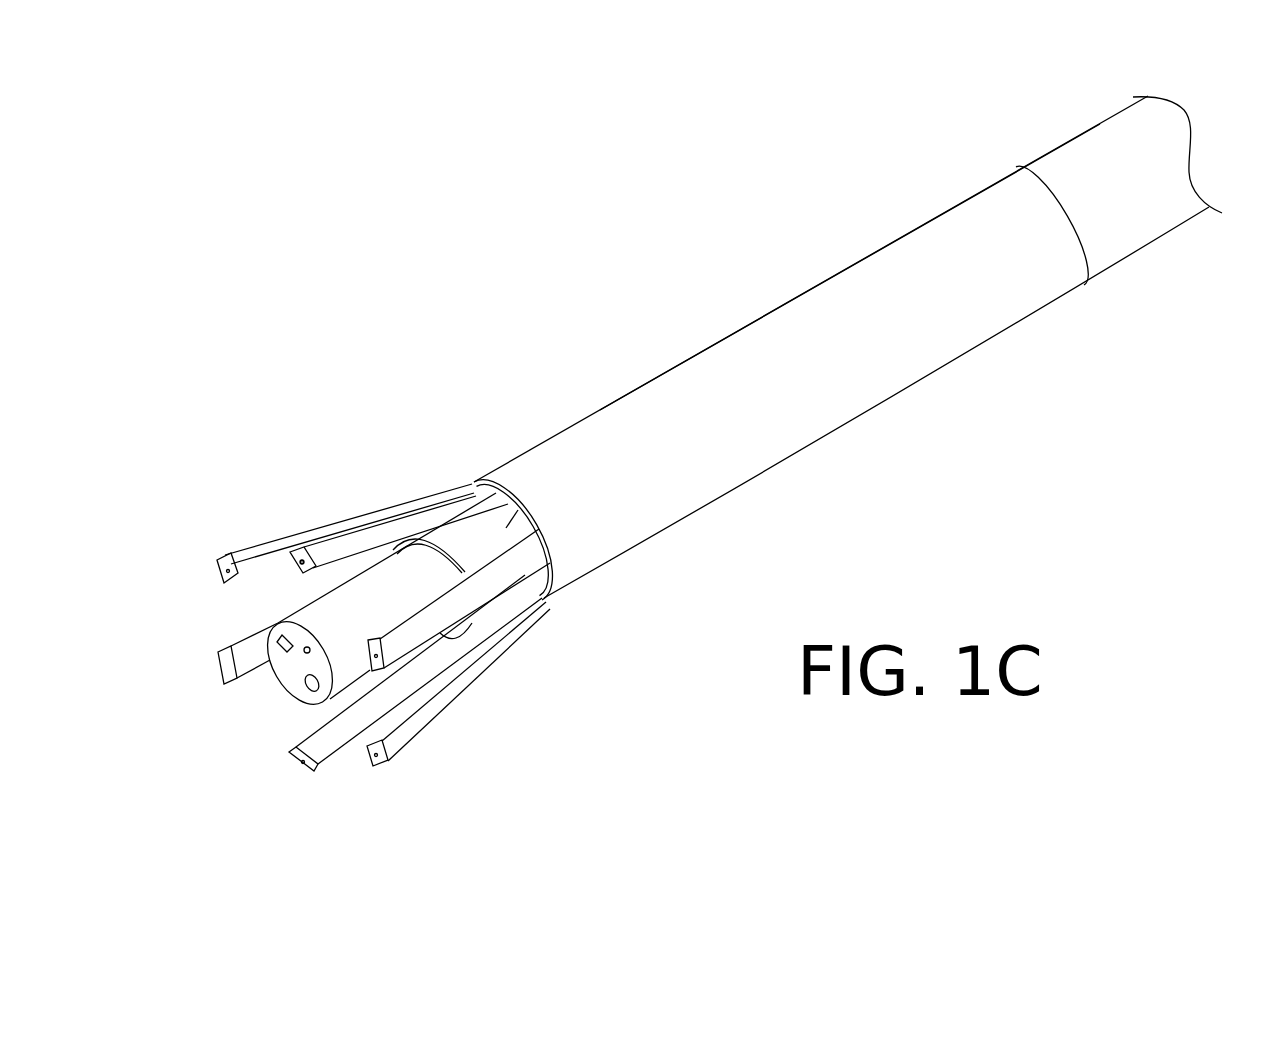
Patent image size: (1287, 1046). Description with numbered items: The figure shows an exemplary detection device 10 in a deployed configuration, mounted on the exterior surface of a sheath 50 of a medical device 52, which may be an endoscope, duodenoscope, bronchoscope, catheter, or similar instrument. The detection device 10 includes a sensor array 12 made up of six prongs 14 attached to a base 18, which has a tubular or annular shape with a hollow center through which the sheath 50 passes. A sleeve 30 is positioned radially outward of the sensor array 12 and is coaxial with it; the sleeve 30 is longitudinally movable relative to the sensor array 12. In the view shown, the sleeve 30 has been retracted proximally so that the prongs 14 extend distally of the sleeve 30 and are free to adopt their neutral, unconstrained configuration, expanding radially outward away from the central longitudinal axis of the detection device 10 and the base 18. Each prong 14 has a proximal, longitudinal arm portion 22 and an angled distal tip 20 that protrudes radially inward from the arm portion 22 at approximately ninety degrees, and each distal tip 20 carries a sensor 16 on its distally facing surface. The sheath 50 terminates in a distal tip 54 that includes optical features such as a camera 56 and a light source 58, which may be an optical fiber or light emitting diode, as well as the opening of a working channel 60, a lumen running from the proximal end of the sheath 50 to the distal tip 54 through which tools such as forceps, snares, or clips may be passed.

The detection device 10 is at (664, 323).
The sensor array 12 is at (342, 490).
The prongs 14 is at (218, 565).
The sensor 16 is at (300, 564).
The base 18 is at (522, 499).
The distal tip 20 is at (305, 766).
The longitudinal arm portion 22 is at (330, 742).
The sleeve 30 is at (561, 434).
The sheath 50 is at (1079, 137).
The medical device 52 is at (1179, 275).
The distal tip 54 is at (410, 660).
The camera 56 is at (280, 642).
The light source 58 is at (304, 652).
The working channel 60 is at (308, 686).